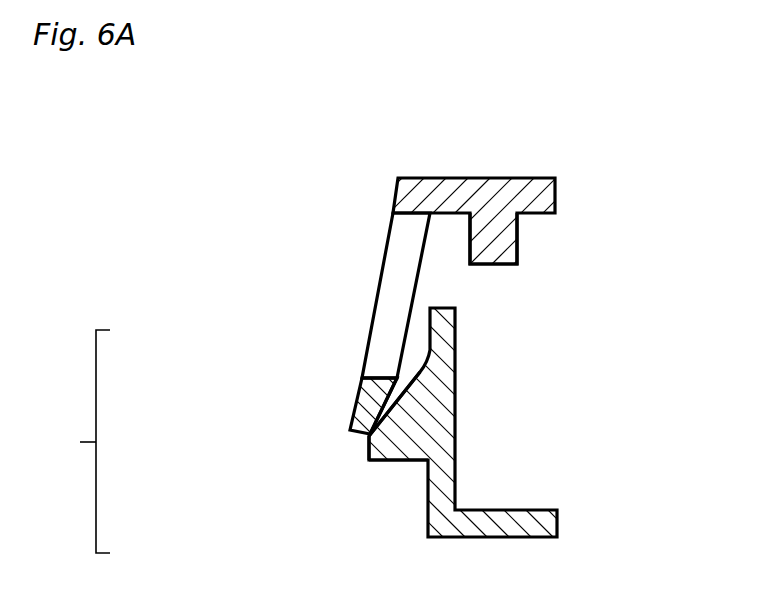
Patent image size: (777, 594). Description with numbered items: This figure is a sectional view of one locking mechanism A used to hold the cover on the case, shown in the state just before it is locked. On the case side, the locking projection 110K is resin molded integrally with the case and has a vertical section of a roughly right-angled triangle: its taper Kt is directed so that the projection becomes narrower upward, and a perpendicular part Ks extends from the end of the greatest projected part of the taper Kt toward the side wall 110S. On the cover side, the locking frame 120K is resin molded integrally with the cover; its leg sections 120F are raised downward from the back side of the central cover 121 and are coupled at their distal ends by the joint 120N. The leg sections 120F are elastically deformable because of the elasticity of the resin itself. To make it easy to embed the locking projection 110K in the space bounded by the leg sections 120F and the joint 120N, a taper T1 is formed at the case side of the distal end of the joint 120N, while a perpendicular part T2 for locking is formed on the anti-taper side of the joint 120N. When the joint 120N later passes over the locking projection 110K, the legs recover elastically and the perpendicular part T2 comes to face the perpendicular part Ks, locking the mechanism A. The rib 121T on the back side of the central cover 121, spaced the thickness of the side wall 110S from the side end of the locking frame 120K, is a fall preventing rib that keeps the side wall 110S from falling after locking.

The central cover 121 is at (458, 190).
The rib 121T is at (518, 243).
The locking frame 120K is at (298, 326).
The leg section 120F is at (395, 277).
The joint 120N is at (360, 400).
The locking projection 110K is at (358, 462).
The side wall 110S is at (437, 483).
The taper T1 is at (367, 450).
The perpendicular part T2 is at (375, 378).
The perpendicular part Ks is at (405, 462).
The taper Kt is at (398, 385).
The locking mechanism A is at (62, 441).